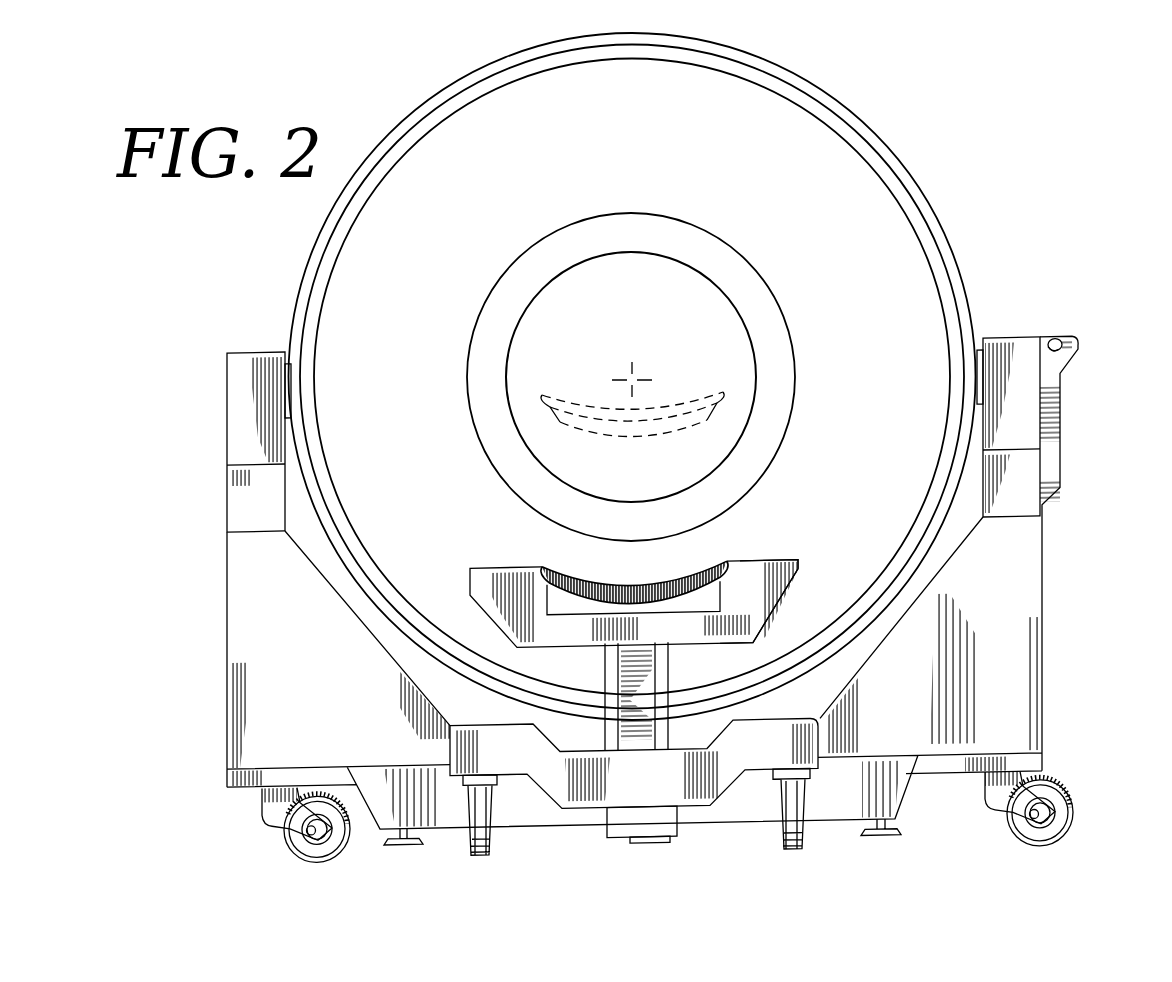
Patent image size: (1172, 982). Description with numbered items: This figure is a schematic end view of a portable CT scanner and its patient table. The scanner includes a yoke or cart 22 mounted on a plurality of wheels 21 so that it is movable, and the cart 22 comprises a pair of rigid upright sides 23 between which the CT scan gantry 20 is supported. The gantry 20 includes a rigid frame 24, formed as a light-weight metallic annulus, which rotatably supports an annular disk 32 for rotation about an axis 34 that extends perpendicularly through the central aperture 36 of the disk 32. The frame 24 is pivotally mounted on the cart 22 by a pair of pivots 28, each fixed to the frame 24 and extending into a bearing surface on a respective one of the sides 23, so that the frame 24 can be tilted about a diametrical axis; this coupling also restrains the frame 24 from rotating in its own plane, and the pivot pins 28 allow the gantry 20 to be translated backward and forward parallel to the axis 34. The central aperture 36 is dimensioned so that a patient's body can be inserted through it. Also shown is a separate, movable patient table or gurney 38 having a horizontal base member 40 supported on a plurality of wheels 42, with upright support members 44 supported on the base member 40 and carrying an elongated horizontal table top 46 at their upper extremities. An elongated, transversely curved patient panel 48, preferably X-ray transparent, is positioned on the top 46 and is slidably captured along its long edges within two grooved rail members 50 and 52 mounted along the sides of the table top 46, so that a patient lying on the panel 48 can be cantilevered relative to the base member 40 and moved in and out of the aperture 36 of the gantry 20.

The CT scan gantry 20 is at (838, 55).
The wheels 21 is at (290, 846).
The yoke or cart 22 is at (1045, 605).
The upright sides 23 is at (268, 501).
The rigid frame 24 is at (864, 119).
The pivots 28 is at (288, 352).
The annular disk 32 is at (880, 222).
The axis 34 is at (631, 379).
The central aperture 36 is at (630, 317).
The patient table or gurney 38 is at (570, 807).
The horizontal base member 40 is at (665, 785).
The wheels 42 is at (470, 848).
The upright support members 44 is at (672, 668).
The table top 46 is at (795, 598).
The patient palette or panel 48 is at (640, 437).
The rail member 50 is at (484, 568).
The rail member 52 is at (800, 563).